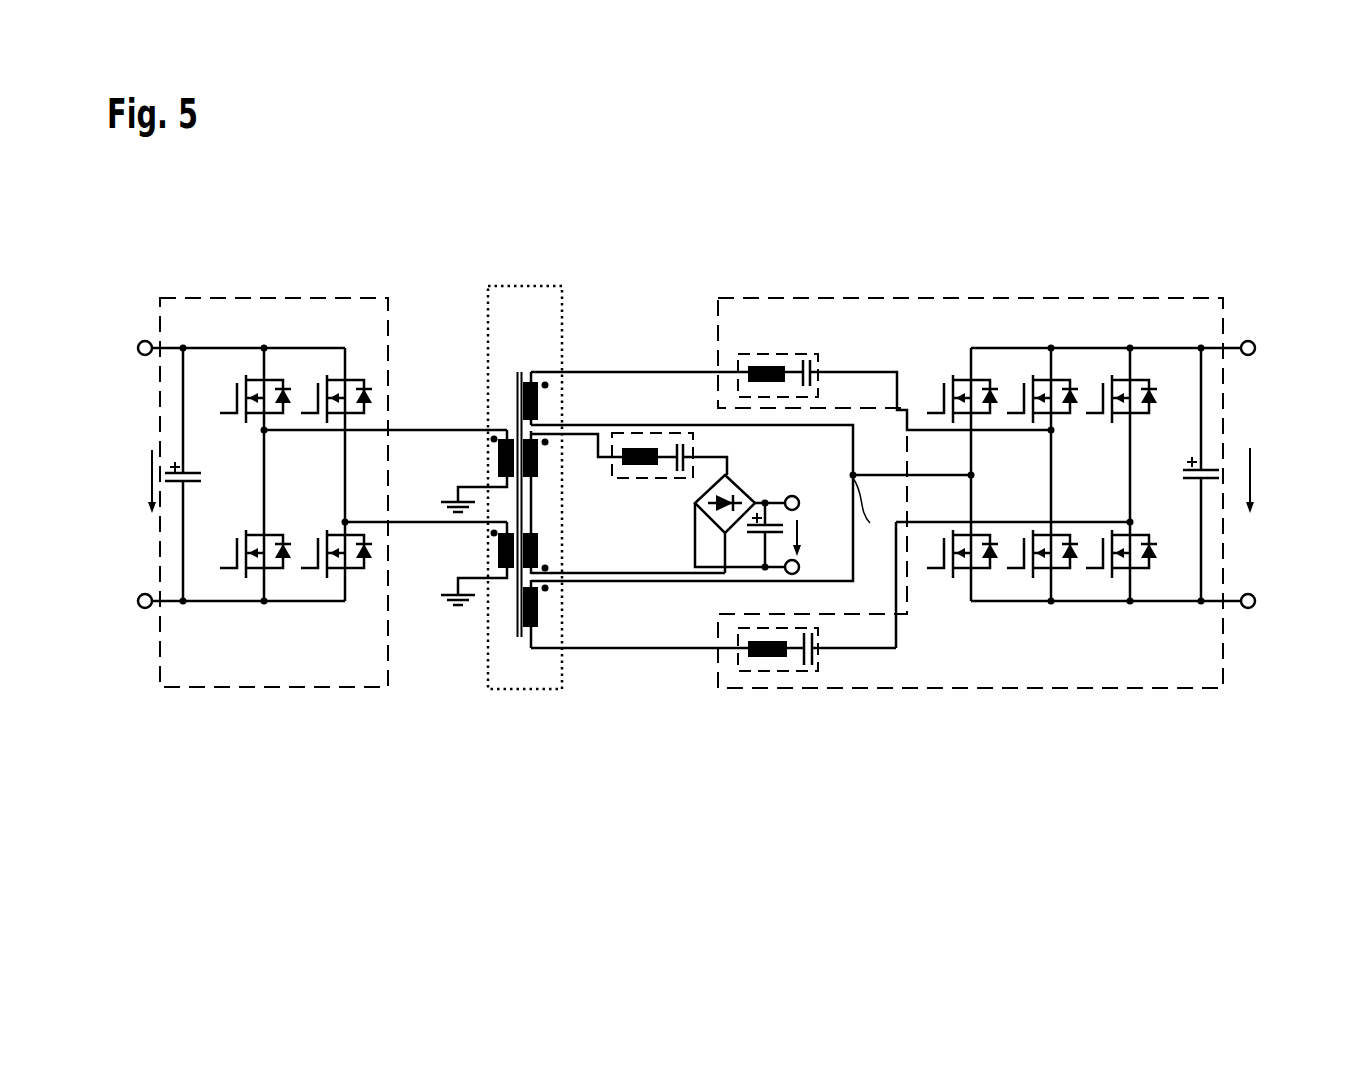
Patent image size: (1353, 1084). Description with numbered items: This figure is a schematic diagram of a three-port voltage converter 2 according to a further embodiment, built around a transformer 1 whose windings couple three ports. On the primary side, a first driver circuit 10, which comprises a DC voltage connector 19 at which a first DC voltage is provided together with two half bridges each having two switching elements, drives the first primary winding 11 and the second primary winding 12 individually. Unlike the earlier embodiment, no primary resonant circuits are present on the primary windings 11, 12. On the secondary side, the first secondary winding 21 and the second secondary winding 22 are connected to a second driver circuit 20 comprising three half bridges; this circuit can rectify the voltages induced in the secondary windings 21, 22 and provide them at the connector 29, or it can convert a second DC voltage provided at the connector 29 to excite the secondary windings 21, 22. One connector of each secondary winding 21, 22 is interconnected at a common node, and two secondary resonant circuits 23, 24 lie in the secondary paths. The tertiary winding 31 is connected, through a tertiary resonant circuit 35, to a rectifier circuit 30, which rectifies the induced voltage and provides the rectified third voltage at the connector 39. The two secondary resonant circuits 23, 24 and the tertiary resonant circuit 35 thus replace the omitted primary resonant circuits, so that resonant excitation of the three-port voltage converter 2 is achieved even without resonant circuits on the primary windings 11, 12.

The transformer 1 is at (530, 695).
The three-port voltage converter 2 is at (191, 721).
The first driver circuit 10 is at (262, 690).
The first primary winding 11 is at (510, 570).
The second primary winding 12 is at (510, 437).
The DC voltage connector 19 is at (178, 411).
The second driver circuit 20 is at (1067, 690).
The first secondary winding 21 is at (540, 608).
The second secondary winding 22 is at (540, 398).
The secondary resonant circuit 23 is at (768, 672).
The secondary resonant circuit 24 is at (772, 345).
The connector 29 is at (1230, 410).
The rectifier circuit 30 is at (738, 485).
The tertiary winding 31 is at (540, 535).
The tertiary resonant circuit 35 is at (645, 480).
The connector 39 is at (794, 520).